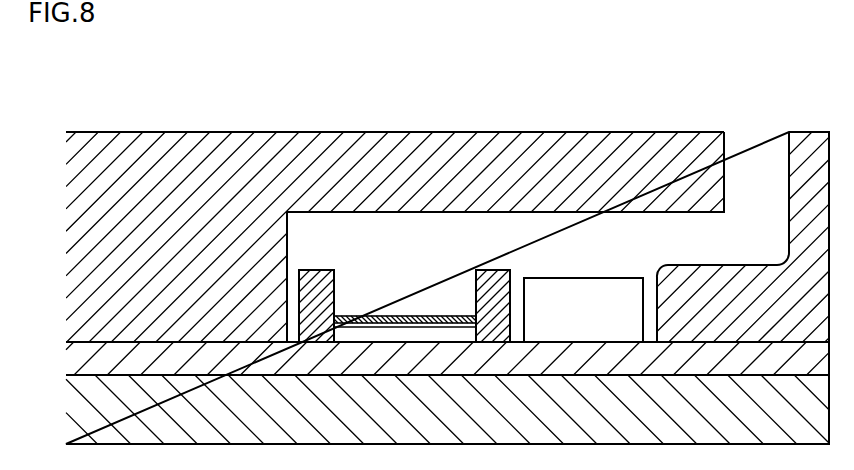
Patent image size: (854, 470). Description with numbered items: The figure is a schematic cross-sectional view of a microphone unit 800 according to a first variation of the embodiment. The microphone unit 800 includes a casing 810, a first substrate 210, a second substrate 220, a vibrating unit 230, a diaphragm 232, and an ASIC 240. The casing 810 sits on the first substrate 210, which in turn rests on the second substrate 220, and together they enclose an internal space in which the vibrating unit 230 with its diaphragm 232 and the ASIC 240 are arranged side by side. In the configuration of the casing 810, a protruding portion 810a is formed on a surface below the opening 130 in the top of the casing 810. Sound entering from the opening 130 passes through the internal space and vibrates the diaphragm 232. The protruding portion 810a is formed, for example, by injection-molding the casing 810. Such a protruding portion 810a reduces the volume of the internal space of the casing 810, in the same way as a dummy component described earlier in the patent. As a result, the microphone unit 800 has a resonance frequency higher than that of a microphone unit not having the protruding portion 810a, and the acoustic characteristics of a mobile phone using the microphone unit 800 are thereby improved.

The microphone unit 800 is at (234, 78).
The casing 810 is at (148, 143).
The protruding portion 810a is at (716, 277).
The opening 130 is at (757, 140).
The first substrate 210 is at (73, 358).
The second substrate 220 is at (73, 407).
The vibrating unit 230 is at (318, 275).
The diaphragm 232 is at (400, 316).
The ASIC 240 is at (582, 292).